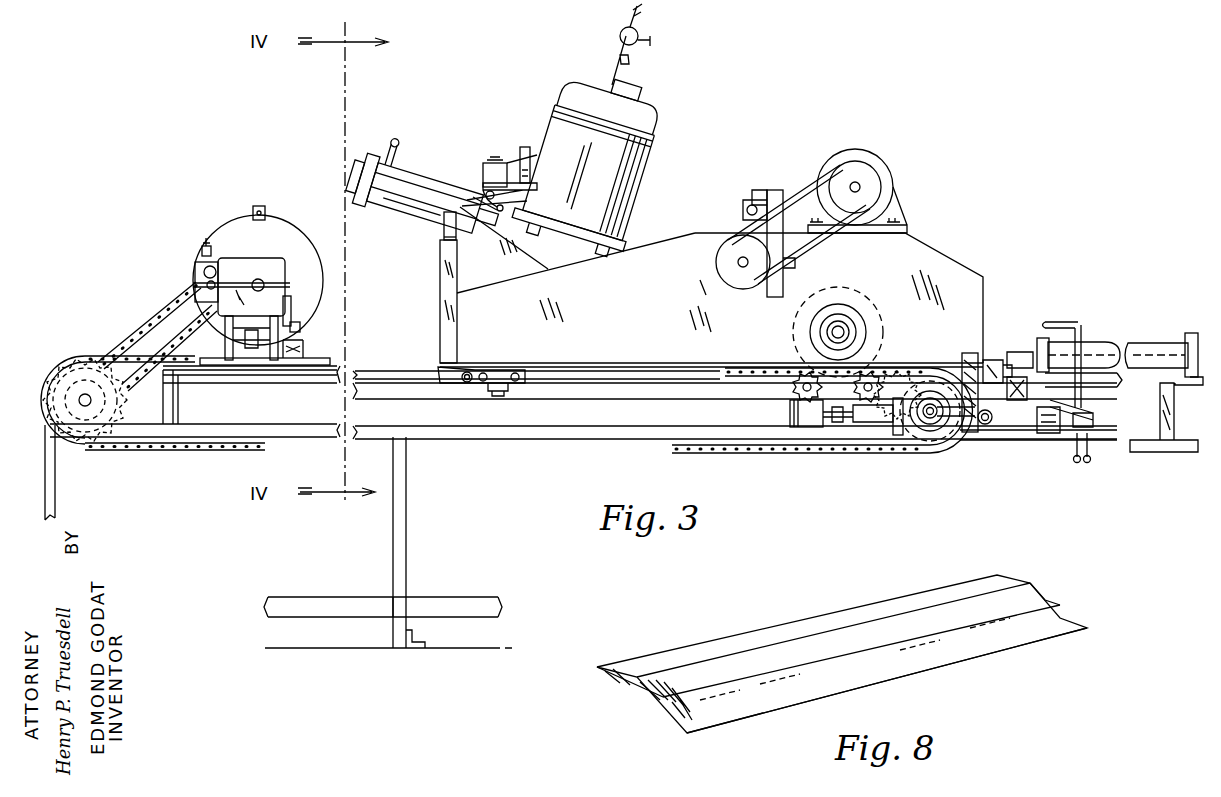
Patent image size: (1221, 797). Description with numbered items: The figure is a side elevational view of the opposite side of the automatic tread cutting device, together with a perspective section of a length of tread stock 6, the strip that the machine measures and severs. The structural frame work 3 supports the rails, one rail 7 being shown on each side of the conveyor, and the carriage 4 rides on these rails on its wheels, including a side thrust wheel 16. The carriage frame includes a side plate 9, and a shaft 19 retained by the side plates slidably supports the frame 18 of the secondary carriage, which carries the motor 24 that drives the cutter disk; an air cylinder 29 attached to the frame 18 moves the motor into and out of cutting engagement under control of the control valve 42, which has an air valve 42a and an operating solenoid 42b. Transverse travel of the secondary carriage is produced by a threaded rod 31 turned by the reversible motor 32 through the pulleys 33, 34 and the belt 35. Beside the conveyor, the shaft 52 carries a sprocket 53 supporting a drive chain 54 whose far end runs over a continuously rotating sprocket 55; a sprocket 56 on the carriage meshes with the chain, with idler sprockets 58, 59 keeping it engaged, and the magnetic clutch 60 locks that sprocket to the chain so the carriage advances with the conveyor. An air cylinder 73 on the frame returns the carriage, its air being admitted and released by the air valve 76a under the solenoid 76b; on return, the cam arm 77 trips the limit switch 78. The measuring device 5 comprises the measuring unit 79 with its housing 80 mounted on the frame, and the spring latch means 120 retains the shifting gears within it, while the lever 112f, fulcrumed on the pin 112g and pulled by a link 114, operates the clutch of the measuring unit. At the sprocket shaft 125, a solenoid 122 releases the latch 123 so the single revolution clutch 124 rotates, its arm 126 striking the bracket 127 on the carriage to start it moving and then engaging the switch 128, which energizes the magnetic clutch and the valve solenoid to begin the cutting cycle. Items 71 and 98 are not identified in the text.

In FIG. 3, the structural frame work 3 is at (407, 460).
In FIG. 3, the carriage 4 is at (695, 200).
In FIG. 3, the measuring device 5 is at (197, 212).
In FIG. 8, the tread stock 6 is at (722, 660).
In FIG. 3, the rail 7 is at (595, 400).
In FIG. 3, the side plate 9 is at (905, 253).
In FIG. 3, the side thrust wheel 16 is at (500, 392).
In FIG. 3, the frame 18 is at (485, 235).
In FIG. 3, the shaft 19 is at (793, 263).
In FIG. 3, the motor 24 is at (555, 110).
In FIG. 3, the air cylinder 29 is at (428, 195).
In FIG. 3, the threaded rod 31 is at (738, 264).
In FIG. 3, the reversible motor 32 is at (870, 165).
In FIG. 3, the pulley 33 is at (855, 183).
In FIG. 3, the pulley 34 is at (730, 255).
In FIG. 3, the belt 35 is at (790, 205).
In FIG. 3, the control valve 42 is at (510, 193).
In FIG. 3, the air valve 42a is at (483, 172).
In FIG. 3, the operating solenoid 42b is at (524, 147).
In FIG. 3, the shaft 52 is at (86, 395).
In FIG. 3, the sprocket 53 is at (62, 378).
In FIG. 3, the drive chain 54 is at (178, 450).
In FIG. 3, the sprocket 55 is at (921, 450).
In FIG. 3, the sprocket 56 is at (872, 312).
In FIG. 3, the idler sprocket 58 is at (870, 404).
In FIG. 3, the idler sprocket 59 is at (798, 398).
In FIG. 3, the magnetic clutch 60 is at (812, 322).
In FIG. 3, the valve rod 71 is at (635, 80).
In FIG. 3, the air cylinder 73 is at (1098, 347).
In FIG. 3, the air valve 76a is at (1092, 425).
In FIG. 3, the solenoid 76b is at (1050, 438).
In FIG. 3, the cam arm 77 is at (1018, 377).
In FIG. 3, the limit switch 78 is at (986, 425).
In FIG. 3, the measuring unit 79 is at (238, 235).
In FIG. 3, the housing 80 is at (270, 262).
In FIG. 3, the chain 98 is at (152, 333).
In FIG. 3, the lever 112f is at (298, 334).
In FIG. 3, the pin 112g is at (292, 330).
In FIG. 3, the link 114 is at (304, 346).
In FIG. 3, the spring latch means 120 is at (204, 258).
In FIG. 3, the solenoid 122 is at (812, 428).
In FIG. 3, the latch 123 is at (898, 436).
In FIG. 3, the single revolution clutch 124 is at (922, 390).
In FIG. 3, the shaft 125 is at (934, 415).
In FIG. 3, the arm 126 is at (1010, 435).
In FIG. 3, the bracket 127 is at (970, 352).
In FIG. 3, the switch 128 is at (1000, 358).